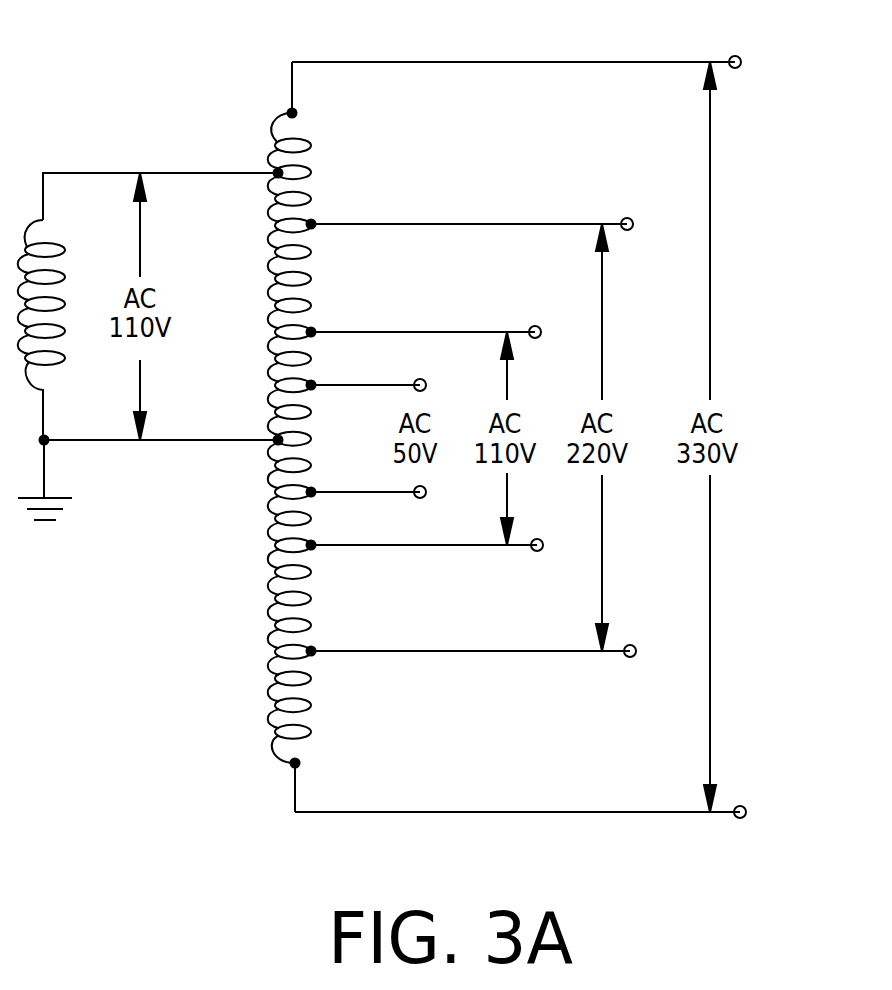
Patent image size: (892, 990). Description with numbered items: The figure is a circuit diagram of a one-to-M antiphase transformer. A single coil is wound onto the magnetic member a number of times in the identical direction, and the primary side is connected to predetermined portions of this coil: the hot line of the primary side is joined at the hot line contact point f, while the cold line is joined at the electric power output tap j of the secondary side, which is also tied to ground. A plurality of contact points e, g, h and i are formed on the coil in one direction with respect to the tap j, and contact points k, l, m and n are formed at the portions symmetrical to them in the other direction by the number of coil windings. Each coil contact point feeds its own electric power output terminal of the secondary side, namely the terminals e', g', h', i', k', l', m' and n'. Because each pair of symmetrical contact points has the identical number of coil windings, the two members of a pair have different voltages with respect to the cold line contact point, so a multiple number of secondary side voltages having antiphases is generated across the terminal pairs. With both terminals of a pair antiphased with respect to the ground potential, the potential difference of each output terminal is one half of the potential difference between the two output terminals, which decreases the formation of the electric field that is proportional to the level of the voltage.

The coil contact point e is at (305, 93).
The electric power output terminal of the secondary side e' is at (535, 57).
The hot line contact point of the primary side f is at (163, 177).
The coil contact point g is at (321, 207).
The electric power output terminal of the secondary side g' is at (493, 221).
The coil contact point h is at (324, 315).
The electric power output terminal of the secondary side h' is at (445, 326).
The coil contact point i is at (319, 367).
The electric power output terminal of the secondary side i' is at (382, 382).
The electric power output tap of the secondary side j is at (163, 420).
The coil contact point k is at (324, 476).
The electric power output terminal of the secondary side k' is at (387, 489).
The coil contact point l is at (320, 526).
The electric power output terminal of the secondary side l' is at (440, 542).
The coil contact point m is at (331, 635).
The electric power output terminal of the secondary side m' is at (498, 647).
The coil contact point n is at (311, 779).
The electric power output terminal of the secondary side n' is at (539, 809).